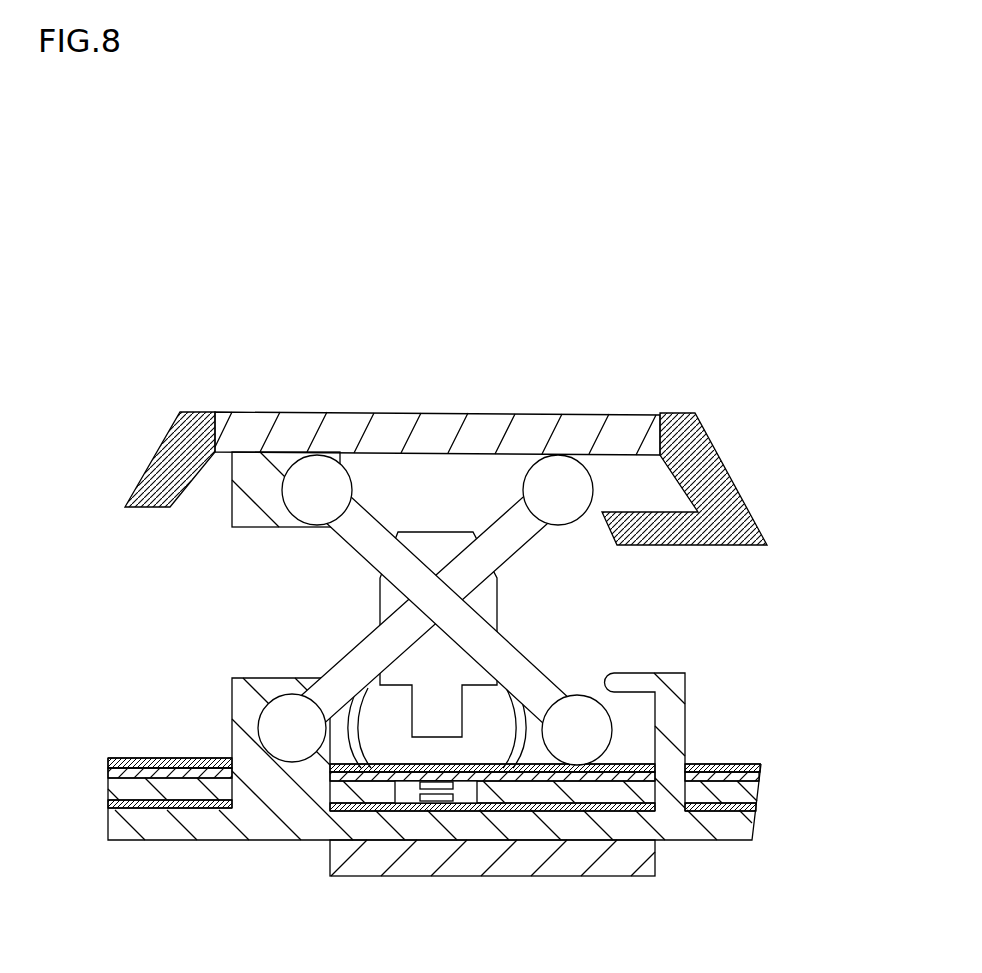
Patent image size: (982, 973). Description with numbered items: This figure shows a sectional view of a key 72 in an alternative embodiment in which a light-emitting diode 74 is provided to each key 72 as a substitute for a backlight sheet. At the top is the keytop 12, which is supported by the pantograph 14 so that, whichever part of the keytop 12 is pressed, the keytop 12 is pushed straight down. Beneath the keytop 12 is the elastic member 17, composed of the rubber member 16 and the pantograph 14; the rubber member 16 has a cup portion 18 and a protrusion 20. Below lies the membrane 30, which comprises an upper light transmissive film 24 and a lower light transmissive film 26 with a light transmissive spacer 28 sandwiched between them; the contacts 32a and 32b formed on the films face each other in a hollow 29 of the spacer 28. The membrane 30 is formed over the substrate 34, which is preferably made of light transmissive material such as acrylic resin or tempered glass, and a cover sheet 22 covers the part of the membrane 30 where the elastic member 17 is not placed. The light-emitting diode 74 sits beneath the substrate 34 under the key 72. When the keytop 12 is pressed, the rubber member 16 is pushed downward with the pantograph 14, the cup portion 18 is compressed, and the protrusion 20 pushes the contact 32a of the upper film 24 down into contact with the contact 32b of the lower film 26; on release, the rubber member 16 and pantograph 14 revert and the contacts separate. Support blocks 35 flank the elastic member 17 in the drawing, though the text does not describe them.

The keytop 12 is at (576, 438).
The pantograph 14 is at (367, 550).
The rubber member 16 is at (387, 610).
The elastic member 17 is at (123, 563).
The cup portion 18 is at (517, 720).
The protrusion 20 is at (437, 715).
The cover sheet 22 is at (140, 760).
The upper light transmissive film 24 is at (762, 780).
The lower light transmissive film 26 is at (753, 807).
The light transmissive spacer 28 is at (753, 792).
The hollow 29 is at (468, 790).
The membrane 30 is at (840, 737).
The contact 32a is at (426, 790).
The contact 32b is at (433, 802).
The substrate 34 is at (107, 822).
The support member 35 is at (247, 692).
The key 72 is at (538, 318).
The light-emitting diode 74 is at (621, 862).